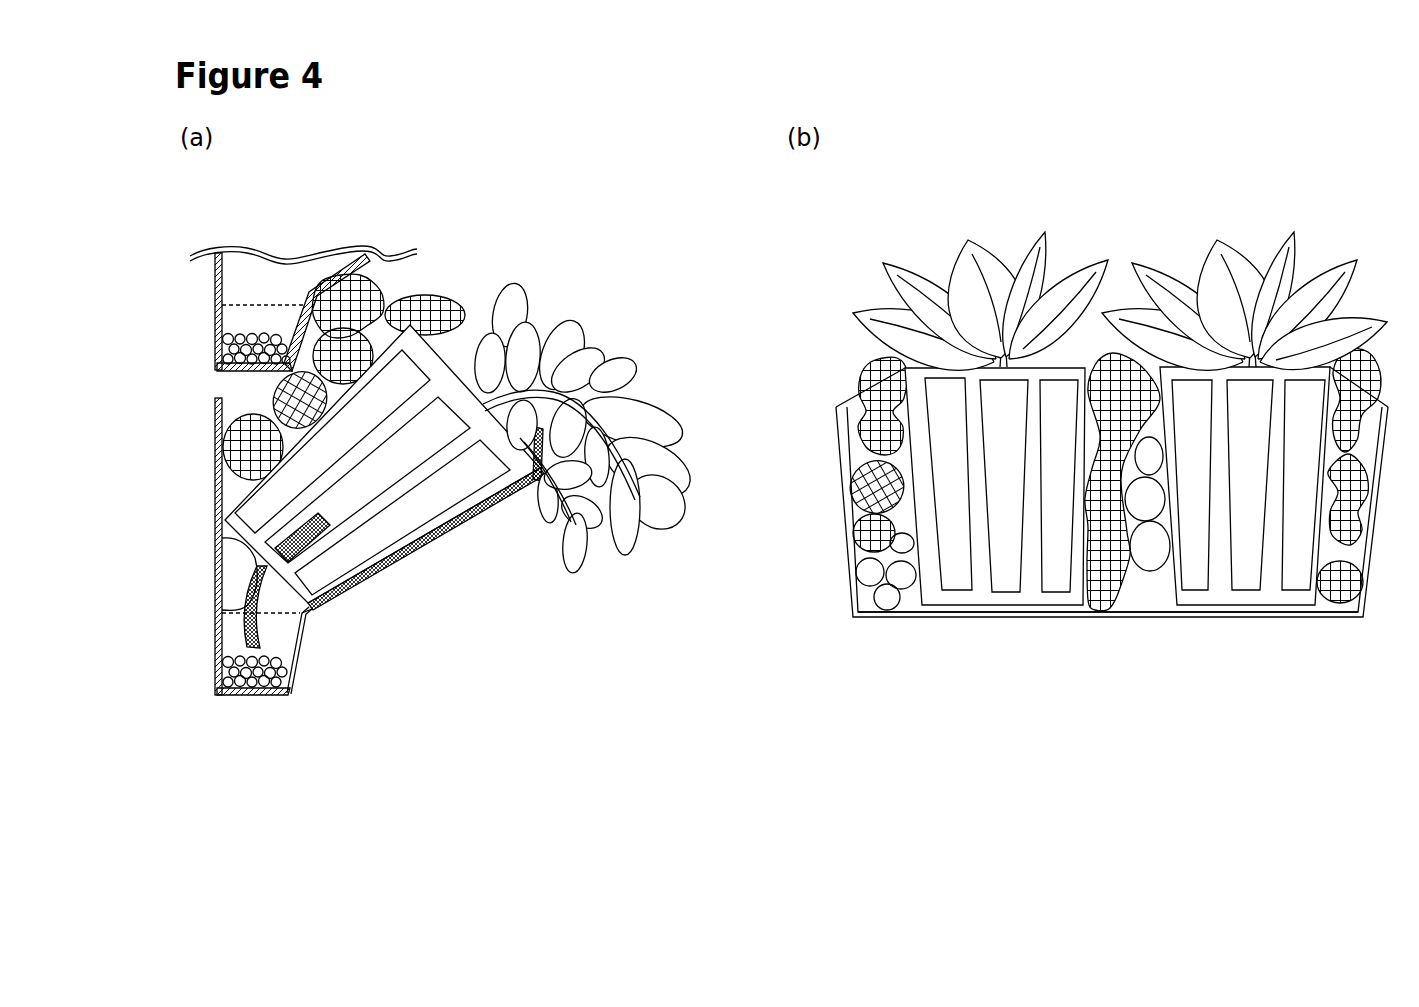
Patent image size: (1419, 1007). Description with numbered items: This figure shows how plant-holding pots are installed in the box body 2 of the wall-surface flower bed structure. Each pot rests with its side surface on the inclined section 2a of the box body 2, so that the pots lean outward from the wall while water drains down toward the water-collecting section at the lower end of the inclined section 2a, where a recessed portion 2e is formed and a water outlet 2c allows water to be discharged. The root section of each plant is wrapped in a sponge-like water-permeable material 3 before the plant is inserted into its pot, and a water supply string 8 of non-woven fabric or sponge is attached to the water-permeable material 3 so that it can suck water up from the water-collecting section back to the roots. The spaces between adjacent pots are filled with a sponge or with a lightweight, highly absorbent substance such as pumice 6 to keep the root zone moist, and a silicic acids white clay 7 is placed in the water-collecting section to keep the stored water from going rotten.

The box body 2 is at (908, 618).
The inclined section 2a is at (410, 553).
The water outlet 2c is at (317, 602).
The recessed portion 2e is at (217, 690).
The water-permeable material 3 is at (247, 568).
The pumice 6 is at (1155, 543).
The silicic acids white clay 7 is at (263, 687).
The water supply string 8 is at (262, 612).